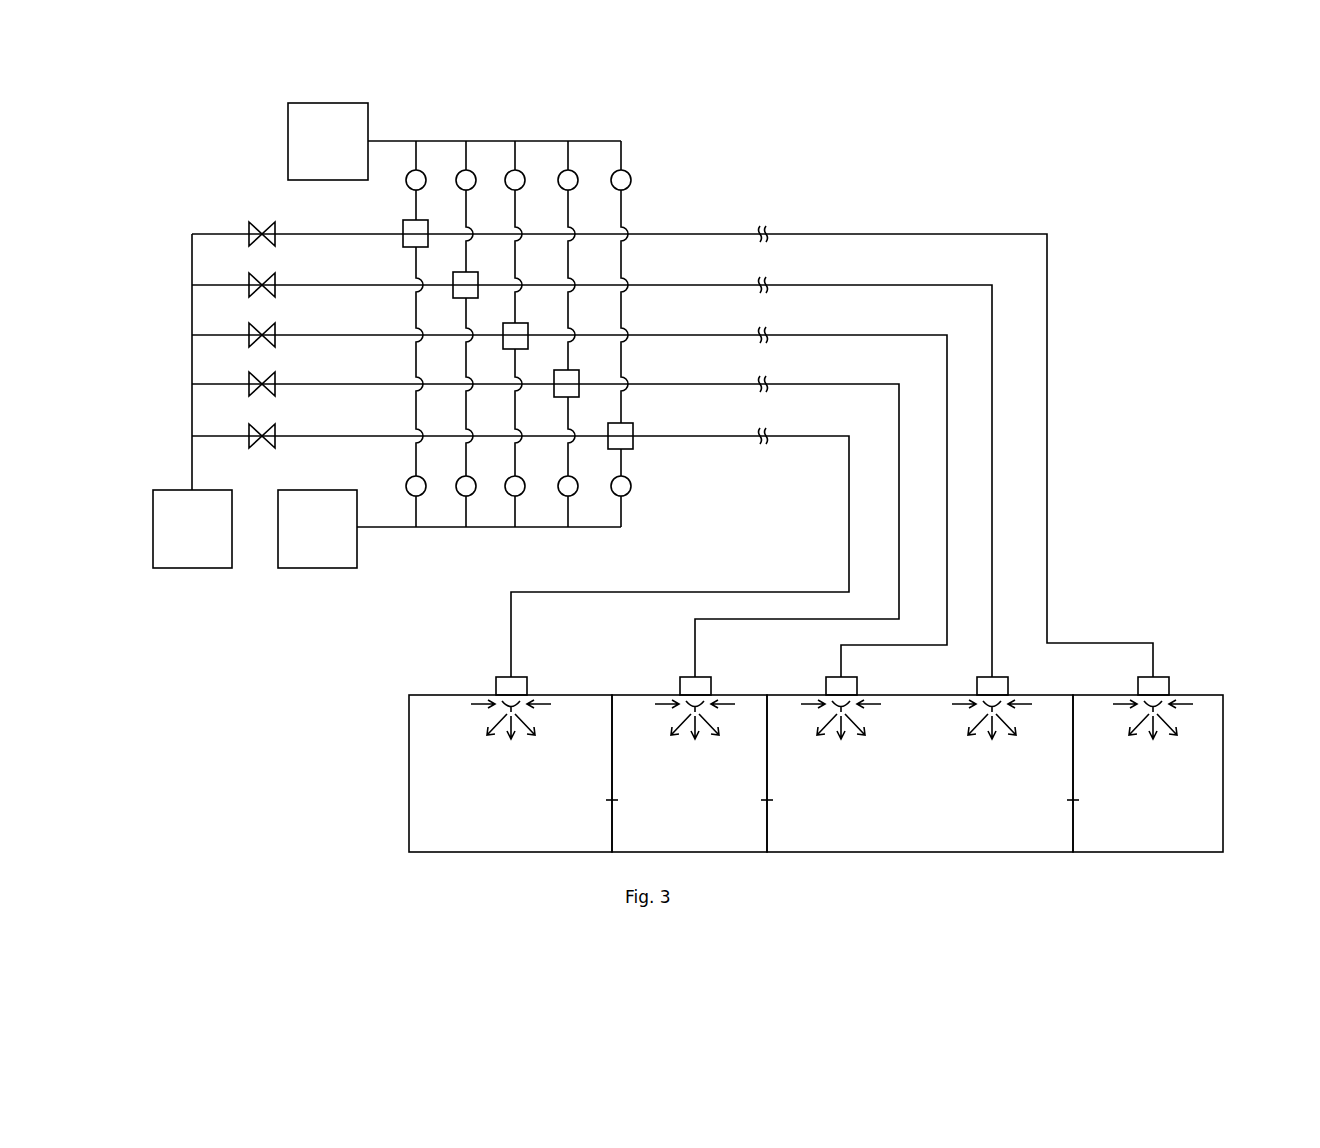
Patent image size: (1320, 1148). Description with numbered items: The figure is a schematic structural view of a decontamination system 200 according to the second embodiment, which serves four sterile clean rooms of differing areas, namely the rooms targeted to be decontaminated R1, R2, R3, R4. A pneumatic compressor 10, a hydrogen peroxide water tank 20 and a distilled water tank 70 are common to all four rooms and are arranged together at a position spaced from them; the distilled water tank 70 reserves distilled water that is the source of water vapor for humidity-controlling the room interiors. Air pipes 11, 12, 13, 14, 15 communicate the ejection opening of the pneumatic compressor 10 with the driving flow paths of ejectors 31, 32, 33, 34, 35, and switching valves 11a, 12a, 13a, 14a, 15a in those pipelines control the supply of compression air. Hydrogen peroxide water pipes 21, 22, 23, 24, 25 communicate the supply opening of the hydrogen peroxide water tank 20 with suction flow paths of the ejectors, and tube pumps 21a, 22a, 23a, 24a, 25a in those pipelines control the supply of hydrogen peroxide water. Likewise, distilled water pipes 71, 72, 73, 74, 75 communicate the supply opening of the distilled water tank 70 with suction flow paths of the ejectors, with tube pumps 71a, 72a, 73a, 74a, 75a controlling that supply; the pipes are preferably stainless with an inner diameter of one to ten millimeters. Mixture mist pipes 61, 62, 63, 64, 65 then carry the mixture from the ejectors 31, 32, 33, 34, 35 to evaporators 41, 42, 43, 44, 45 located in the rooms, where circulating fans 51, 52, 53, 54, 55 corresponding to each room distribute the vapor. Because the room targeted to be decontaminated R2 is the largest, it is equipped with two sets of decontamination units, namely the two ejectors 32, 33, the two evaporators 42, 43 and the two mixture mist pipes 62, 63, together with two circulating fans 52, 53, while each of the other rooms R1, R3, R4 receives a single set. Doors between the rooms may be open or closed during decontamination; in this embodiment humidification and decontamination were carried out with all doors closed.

The decontamination system 200 is at (1120, 260).
The pneumatic compressor 10 is at (171, 565).
The hydrogen peroxide water tank 20 is at (298, 565).
The distilled water tank 70 is at (322, 110).
The air pipe 11 is at (330, 233).
The air pipe 12 is at (330, 284).
The air pipe 13 is at (330, 334).
The air pipe 14 is at (330, 383).
The air pipe 15 is at (330, 435).
The switching valve 11a is at (255, 228).
The switching valve 12a is at (255, 279).
The switching valve 13a is at (255, 329).
The switching valve 14a is at (255, 378).
The switching valve 15a is at (255, 430).
The hydrogen peroxide water pipe 21 is at (420, 270).
The hydrogen peroxide water pipe 22 is at (470, 322).
The hydrogen peroxide water pipe 23 is at (520, 370).
The hydrogen peroxide water pipe 24 is at (592, 410).
The hydrogen peroxide water pipe 25 is at (645, 461).
The tube pump 21a is at (420, 497).
The tube pump 22a is at (470, 497).
The tube pump 23a is at (519, 497).
The tube pump 24a is at (572, 497).
The tube pump 25a is at (625, 497).
The ejector 31 is at (424, 233).
The ejector 32 is at (472, 279).
The ejector 33 is at (522, 330).
The ejector 34 is at (574, 378).
The ejector 35 is at (627, 430).
The mixture mist pipe 61 is at (815, 233).
The mixture mist pipe 62 is at (818, 284).
The mixture mist pipe 63 is at (822, 334).
The mixture mist pipe 64 is at (825, 383).
The mixture mist pipe 65 is at (818, 435).
The distilled water pipe 71 is at (424, 196).
The distilled water pipe 72 is at (470, 220).
The distilled water pipe 73 is at (519, 220).
The distilled water pipe 74 is at (572, 220).
The distilled water pipe 75 is at (625, 220).
The tube pump 71a is at (408, 172).
The tube pump 72a is at (468, 170).
The tube pump 73a is at (517, 170).
The tube pump 74a is at (570, 170).
The tube pump 75a is at (623, 170).
The evaporator 41 is at (1160, 685).
The evaporator 42 is at (997, 685).
The evaporator 43 is at (847, 685).
The evaporator 44 is at (700, 685).
The evaporator 45 is at (517, 685).
The circulating fan 51 is at (1150, 716).
The circulating fan 52 is at (990, 716).
The circulating fan 53 is at (840, 716).
The circulating fan 54 is at (694, 716).
The circulating fan 55 is at (510, 716).
The room targeted to be decontaminated R1 is at (1210, 746).
The room targeted to be decontaminated R2 is at (1046, 725).
The room targeted to be decontaminated R3 is at (625, 709).
The room targeted to be decontaminated R4 is at (422, 740).